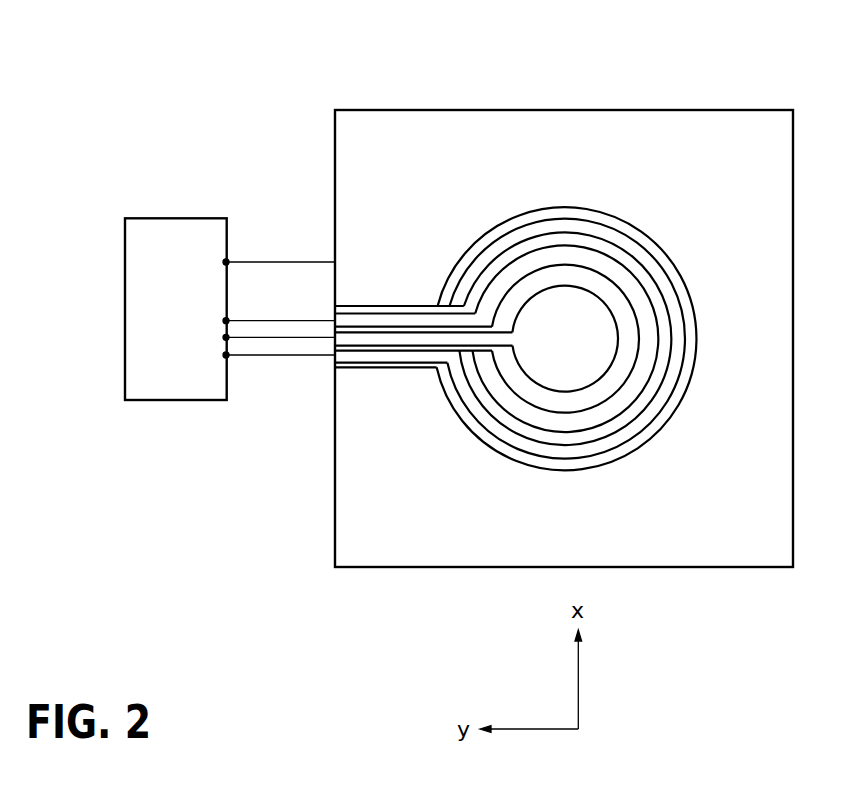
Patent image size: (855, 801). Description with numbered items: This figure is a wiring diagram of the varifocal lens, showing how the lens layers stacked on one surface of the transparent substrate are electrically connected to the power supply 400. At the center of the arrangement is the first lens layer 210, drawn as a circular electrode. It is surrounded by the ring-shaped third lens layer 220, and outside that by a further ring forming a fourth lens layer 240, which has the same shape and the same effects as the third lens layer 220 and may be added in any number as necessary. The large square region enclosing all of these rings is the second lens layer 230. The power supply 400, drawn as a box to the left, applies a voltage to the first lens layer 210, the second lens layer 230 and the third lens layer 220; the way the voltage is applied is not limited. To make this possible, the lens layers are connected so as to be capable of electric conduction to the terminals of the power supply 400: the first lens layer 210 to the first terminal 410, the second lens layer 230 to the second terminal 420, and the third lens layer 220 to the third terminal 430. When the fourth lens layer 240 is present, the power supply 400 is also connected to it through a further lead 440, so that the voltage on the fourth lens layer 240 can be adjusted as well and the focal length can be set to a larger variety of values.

The first lens layer 210 is at (595, 345).
The third lens layer 220 is at (632, 288).
The second lens layer 230 is at (556, 160).
The fourth lens layer 240 is at (622, 238).
The power supply 400 is at (172, 400).
The first terminal 410 is at (225, 340).
The second terminal 420 is at (225, 322).
The third terminal 430 is at (225, 262).
The fourth lead line 440 is at (225, 355).